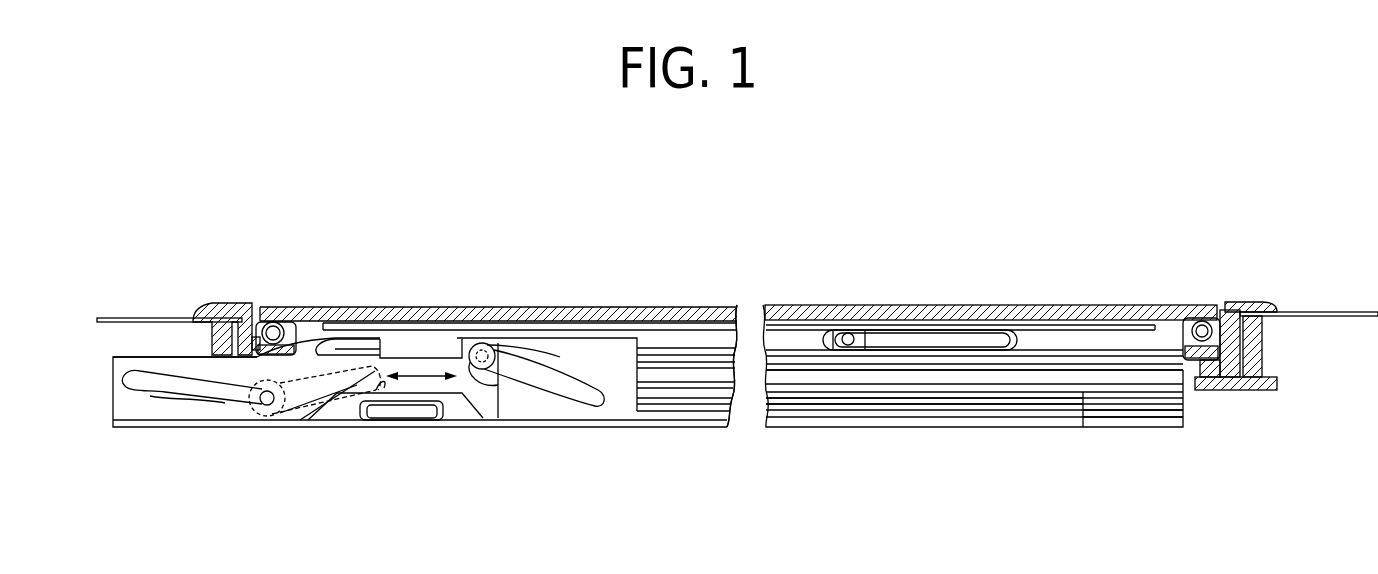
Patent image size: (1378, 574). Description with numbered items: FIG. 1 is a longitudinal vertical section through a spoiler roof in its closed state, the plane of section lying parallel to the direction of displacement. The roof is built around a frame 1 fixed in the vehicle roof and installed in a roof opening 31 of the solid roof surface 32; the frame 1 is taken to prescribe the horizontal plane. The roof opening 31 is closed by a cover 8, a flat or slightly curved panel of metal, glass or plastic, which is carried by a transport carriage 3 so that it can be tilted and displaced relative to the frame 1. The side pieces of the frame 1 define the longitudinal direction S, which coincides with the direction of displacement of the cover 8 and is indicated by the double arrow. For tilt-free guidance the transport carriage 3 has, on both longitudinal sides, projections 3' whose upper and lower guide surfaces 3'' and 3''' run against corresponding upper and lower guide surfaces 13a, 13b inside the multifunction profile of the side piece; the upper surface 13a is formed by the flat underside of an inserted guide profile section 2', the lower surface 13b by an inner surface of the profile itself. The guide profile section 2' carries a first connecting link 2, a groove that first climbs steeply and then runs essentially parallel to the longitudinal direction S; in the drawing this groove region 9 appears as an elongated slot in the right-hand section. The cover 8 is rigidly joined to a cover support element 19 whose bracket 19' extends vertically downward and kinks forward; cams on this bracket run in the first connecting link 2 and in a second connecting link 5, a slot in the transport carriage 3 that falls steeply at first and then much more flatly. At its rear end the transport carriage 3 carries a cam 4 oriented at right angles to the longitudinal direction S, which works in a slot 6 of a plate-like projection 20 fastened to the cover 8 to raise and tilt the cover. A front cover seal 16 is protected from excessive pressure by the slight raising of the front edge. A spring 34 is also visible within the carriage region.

The frame 1 is at (203, 295).
The first connecting link 2 is at (974, 307).
The guide profile section 2' is at (974, 302).
The transport carriage 3 is at (158, 340).
The projections 3' is at (322, 433).
The upper guide surface 3'' is at (336, 428).
The lower guide surface 3''' is at (395, 449).
The cam 4 is at (487, 345).
The second connecting link 5 is at (157, 390).
The slot 6 is at (560, 357).
The cover 8 is at (640, 307).
The slot 9 is at (790, 347).
The upper guide surface 13a is at (1083, 407).
The lower guide surface 13b is at (1153, 417).
The front cover seal 16 is at (273, 327).
The cover support element 19 is at (739, 278).
The bracket 19' is at (322, 306).
The plate-like projection 20 is at (612, 363).
The roof opening 31 is at (750, 323).
The roof surface 32 is at (101, 312).
The spring 34 is at (450, 412).
The longitudinal direction S is at (421, 378).